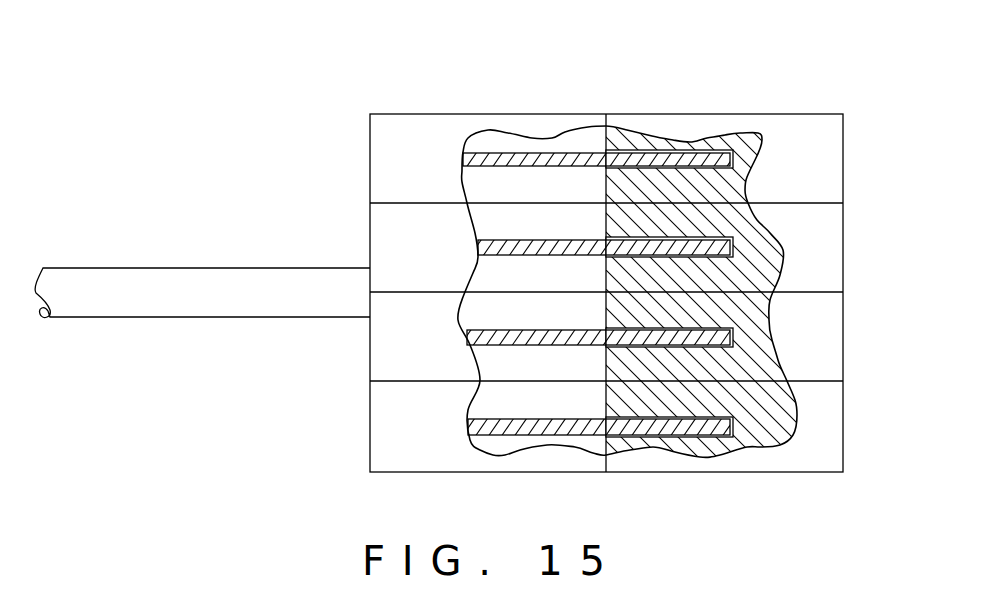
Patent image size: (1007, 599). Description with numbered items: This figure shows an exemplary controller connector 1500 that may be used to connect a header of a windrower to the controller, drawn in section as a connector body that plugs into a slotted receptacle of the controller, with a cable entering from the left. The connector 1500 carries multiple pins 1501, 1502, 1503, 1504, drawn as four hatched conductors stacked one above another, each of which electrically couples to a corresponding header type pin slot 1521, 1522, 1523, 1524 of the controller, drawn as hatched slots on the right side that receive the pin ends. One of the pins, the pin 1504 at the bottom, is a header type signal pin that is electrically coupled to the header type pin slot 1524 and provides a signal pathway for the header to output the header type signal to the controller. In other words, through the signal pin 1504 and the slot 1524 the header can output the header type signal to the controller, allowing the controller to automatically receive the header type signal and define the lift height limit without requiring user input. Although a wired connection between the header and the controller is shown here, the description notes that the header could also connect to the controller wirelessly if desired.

The controller connector 1500 is at (333, 139).
The pin 1501 is at (535, 152).
The pin 1502 is at (520, 256).
The pin 1503 is at (520, 346).
The header type signal pin 1504 is at (527, 436).
The header type pin slot 1521 is at (681, 150).
The header type pin slot 1522 is at (731, 258).
The header type pin slot 1523 is at (727, 348).
The header type pin slot 1524 is at (733, 437).